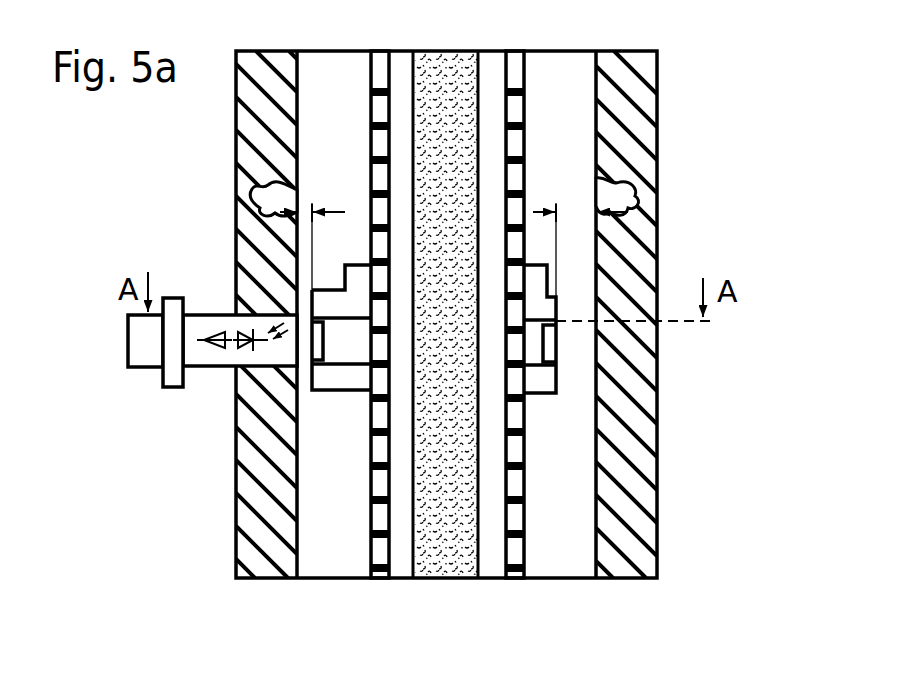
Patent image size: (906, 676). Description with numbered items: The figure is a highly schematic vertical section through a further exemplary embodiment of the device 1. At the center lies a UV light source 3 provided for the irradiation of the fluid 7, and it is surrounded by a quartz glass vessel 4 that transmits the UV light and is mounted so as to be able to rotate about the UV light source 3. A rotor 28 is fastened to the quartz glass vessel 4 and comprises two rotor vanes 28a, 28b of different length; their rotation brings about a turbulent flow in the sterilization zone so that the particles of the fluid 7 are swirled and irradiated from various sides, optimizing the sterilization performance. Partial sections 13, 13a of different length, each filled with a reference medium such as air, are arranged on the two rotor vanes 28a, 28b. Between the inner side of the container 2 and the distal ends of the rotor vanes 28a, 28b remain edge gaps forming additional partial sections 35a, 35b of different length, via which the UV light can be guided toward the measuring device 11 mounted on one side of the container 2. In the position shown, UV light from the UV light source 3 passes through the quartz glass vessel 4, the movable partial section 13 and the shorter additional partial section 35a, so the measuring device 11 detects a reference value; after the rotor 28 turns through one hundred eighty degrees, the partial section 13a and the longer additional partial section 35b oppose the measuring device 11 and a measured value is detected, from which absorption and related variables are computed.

The device 1 is at (699, 149).
The container 2 is at (630, 78).
The UV light source 3 is at (437, 71).
The quartz glass vessel 4 is at (527, 62).
The fluid 7 is at (345, 549).
The measuring device 11 is at (163, 405).
The partial section 13 is at (357, 343).
The partial section 13a is at (533, 342).
The rotor 28 is at (479, 375).
The rotor vane 28a is at (269, 375).
The rotor vane 28b is at (657, 375).
The additional partial section 35a is at (312, 200).
The additional partial section 35b is at (569, 199).